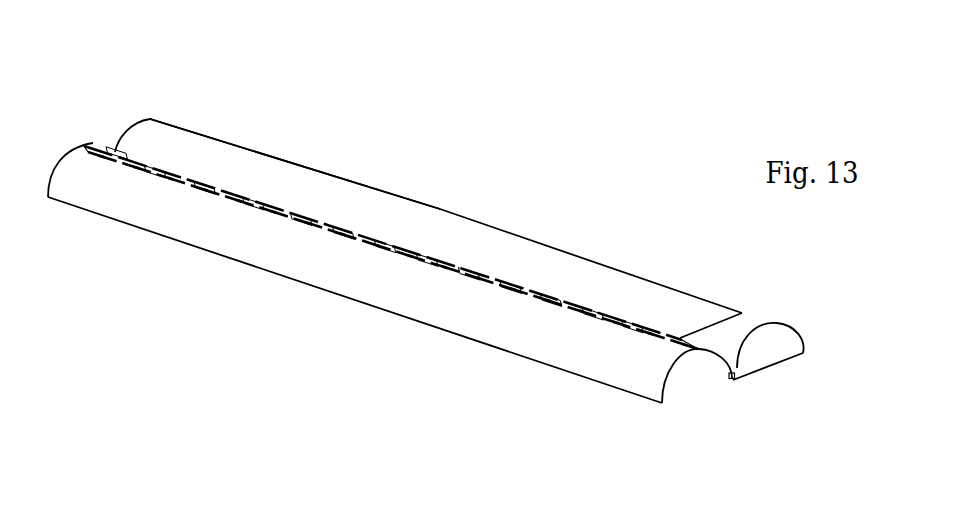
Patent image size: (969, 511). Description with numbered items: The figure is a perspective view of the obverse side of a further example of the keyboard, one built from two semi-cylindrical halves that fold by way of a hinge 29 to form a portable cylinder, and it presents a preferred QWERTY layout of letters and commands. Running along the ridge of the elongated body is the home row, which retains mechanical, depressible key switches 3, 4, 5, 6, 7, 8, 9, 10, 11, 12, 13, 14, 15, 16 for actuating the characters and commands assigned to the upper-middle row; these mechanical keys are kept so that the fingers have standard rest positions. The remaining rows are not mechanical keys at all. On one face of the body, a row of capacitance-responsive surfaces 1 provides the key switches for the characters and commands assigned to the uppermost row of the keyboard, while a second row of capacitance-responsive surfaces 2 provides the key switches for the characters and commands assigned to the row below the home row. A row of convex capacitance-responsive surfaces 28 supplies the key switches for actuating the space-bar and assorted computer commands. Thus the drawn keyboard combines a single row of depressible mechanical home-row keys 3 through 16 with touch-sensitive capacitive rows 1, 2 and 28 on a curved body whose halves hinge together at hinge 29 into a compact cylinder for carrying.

The row of capacitance-responsive surfaces 1 is at (623, 342).
The row of capacitance-responsive surfaces 2 is at (733, 325).
The mechanical depressible key switch 3 is at (742, 313).
The mechanical depressible key switch 4 is at (632, 324).
The mechanical depressible key switch 5 is at (592, 311).
The mechanical depressible key switch 6 is at (550, 297).
The mechanical depressible key switch 7 is at (510, 284).
The mechanical depressible key switch 8 is at (468, 271).
The mechanical depressible key switch 9 is at (426, 257).
The mechanical depressible key switch 10 is at (384, 243).
The mechanical depressible key switch 11 is at (343, 230).
The mechanical depressible key switch 12 is at (300, 216).
The mechanical depressible key switch 13 is at (253, 201).
The mechanical depressible key switch 14 is at (204, 185).
The mechanical depressible key switch 15 is at (154, 169).
The mechanical depressible key switch 16 is at (116, 150).
The row of convex capacitance-responsive surfaces 28 is at (753, 315).
The hinge 29 is at (734, 379).